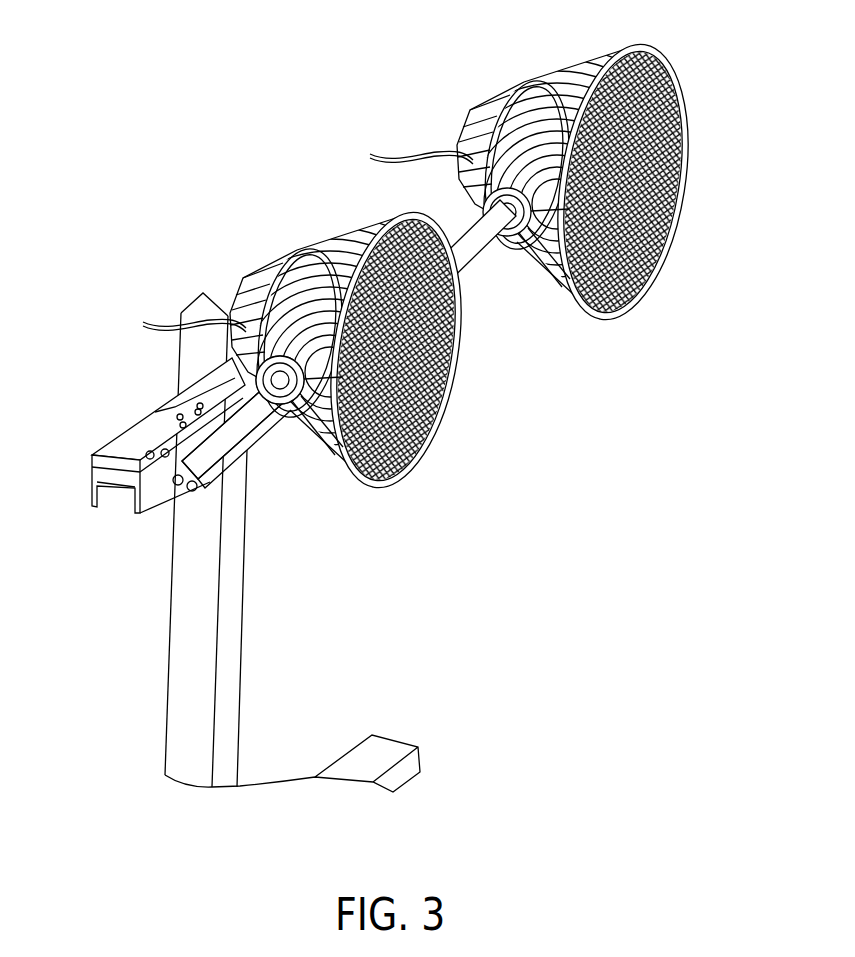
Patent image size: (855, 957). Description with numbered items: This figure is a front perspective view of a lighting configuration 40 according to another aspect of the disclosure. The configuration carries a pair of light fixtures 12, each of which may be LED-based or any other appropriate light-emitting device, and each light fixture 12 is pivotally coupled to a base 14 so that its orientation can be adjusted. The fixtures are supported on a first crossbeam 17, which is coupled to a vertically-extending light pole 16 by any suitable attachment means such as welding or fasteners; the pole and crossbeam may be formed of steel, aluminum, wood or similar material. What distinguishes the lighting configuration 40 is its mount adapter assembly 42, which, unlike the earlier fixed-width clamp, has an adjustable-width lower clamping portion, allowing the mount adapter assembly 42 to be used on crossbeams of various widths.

The lighting configuration 40 is at (155, 130).
The light fixture 12 is at (327, 245).
The base 14 is at (487, 280).
The light pole 16 is at (237, 603).
The first crossbeam 17 is at (192, 400).
The mount adapter assembly 42 is at (85, 434).